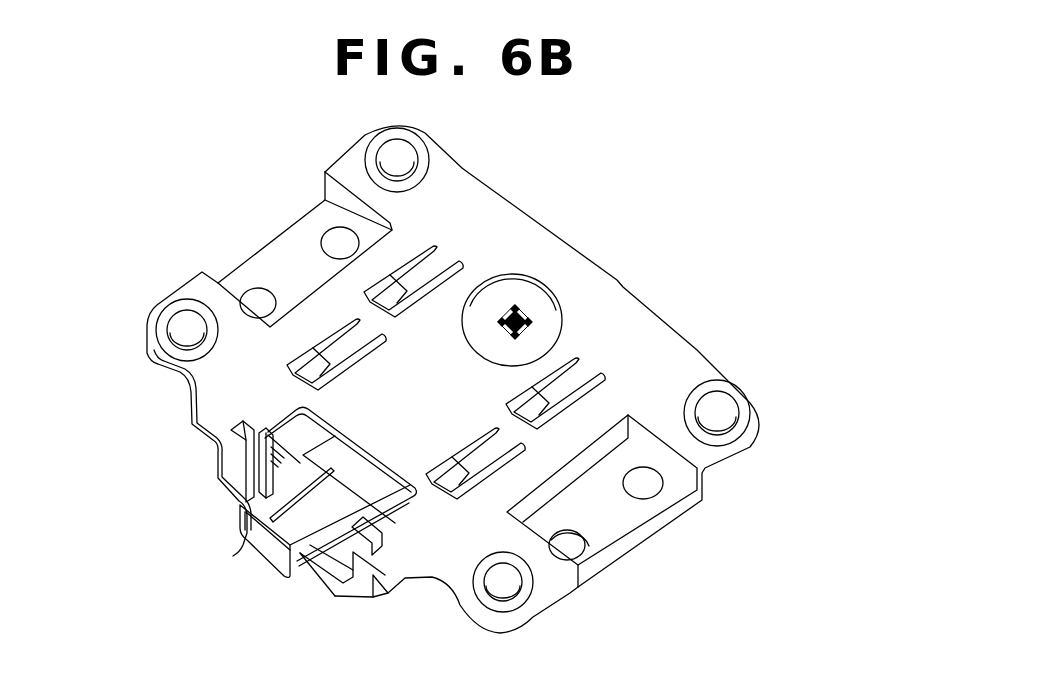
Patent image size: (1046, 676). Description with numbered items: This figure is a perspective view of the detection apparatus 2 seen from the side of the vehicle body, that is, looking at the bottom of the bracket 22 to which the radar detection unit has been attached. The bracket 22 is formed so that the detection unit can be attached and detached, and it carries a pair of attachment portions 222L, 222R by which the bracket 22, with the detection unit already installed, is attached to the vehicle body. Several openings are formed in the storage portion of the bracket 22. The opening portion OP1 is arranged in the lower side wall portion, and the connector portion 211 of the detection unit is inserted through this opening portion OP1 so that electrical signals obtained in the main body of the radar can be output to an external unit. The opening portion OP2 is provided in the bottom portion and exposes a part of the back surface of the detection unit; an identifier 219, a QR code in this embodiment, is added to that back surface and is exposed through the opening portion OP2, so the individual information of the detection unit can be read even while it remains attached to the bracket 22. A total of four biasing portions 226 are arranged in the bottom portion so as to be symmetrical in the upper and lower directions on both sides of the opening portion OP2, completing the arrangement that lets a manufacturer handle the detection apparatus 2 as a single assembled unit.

The detection apparatus 2 is at (806, 203).
The bracket 22 is at (690, 350).
The identifier 219 is at (515, 307).
The opening portion OP2 is at (497, 293).
The opening portion OP1 is at (337, 555).
The attachment portion 222R is at (267, 250).
The attachment portion 222L is at (650, 515).
The biasing portion 226 is at (403, 287).
The connector portion 211 is at (257, 540).